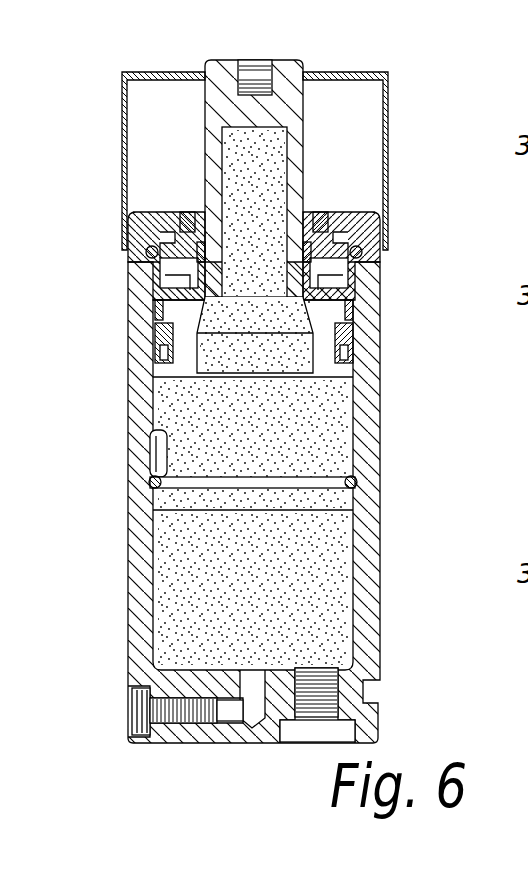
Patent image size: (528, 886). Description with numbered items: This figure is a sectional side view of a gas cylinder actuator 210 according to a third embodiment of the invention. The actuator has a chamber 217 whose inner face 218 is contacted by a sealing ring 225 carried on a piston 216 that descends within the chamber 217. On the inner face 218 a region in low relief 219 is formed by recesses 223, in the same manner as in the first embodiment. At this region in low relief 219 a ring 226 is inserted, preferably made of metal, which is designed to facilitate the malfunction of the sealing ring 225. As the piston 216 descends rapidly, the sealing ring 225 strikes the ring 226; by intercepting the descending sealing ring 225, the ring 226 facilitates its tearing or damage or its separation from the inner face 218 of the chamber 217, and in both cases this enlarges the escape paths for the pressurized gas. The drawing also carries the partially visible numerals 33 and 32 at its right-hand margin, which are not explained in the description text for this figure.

The gas cylinder actuator 210 is at (430, 175).
The piston 216 is at (315, 315).
The chamber 217 is at (310, 620).
The inner face 218 is at (160, 592).
The region in low relief 219 is at (228, 407).
The recesses 223 is at (152, 462).
The sealing ring 225 is at (358, 340).
The ring 226 is at (302, 483).
The partial numeral (cut off) 33 is at (518, 248).
The partial numeral (cut off) 32 is at (519, 395).